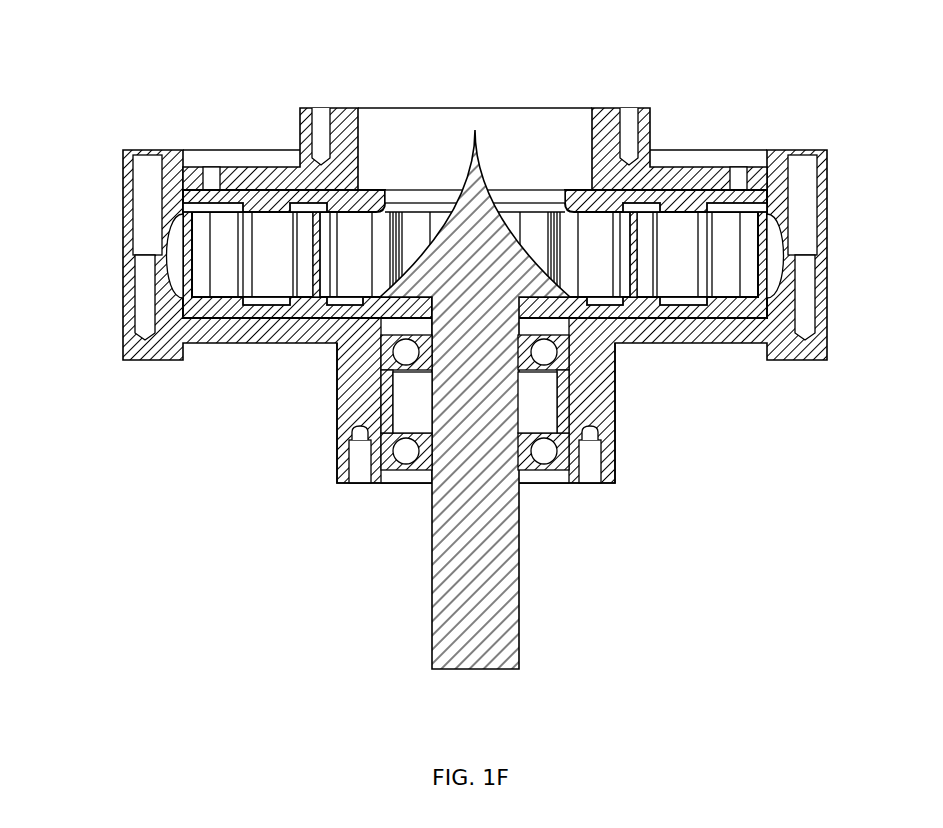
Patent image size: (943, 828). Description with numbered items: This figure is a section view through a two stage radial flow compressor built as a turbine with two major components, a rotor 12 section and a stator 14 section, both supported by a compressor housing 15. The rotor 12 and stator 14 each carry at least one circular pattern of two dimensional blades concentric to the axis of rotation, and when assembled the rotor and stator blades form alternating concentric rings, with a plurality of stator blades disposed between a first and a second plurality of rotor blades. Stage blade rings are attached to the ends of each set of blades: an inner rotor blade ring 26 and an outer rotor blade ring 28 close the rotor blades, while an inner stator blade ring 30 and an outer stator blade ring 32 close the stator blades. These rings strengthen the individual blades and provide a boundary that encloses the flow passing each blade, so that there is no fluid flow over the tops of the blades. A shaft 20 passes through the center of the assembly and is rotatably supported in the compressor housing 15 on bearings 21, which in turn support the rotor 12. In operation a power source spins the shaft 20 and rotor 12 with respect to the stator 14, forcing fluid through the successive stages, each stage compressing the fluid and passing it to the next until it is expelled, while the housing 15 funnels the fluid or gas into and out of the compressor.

The rotor 12 is at (127, 347).
The stator 14 is at (697, 190).
The compressor housing 15 is at (172, 182).
The shaft 20 is at (478, 603).
The bearings 21 is at (382, 453).
The inner rotor blade ring 26 is at (300, 205).
The outer rotor blade ring 28 is at (210, 207).
The inner stator blade ring 30 is at (335, 308).
The outer stator blade ring 32 is at (215, 312).